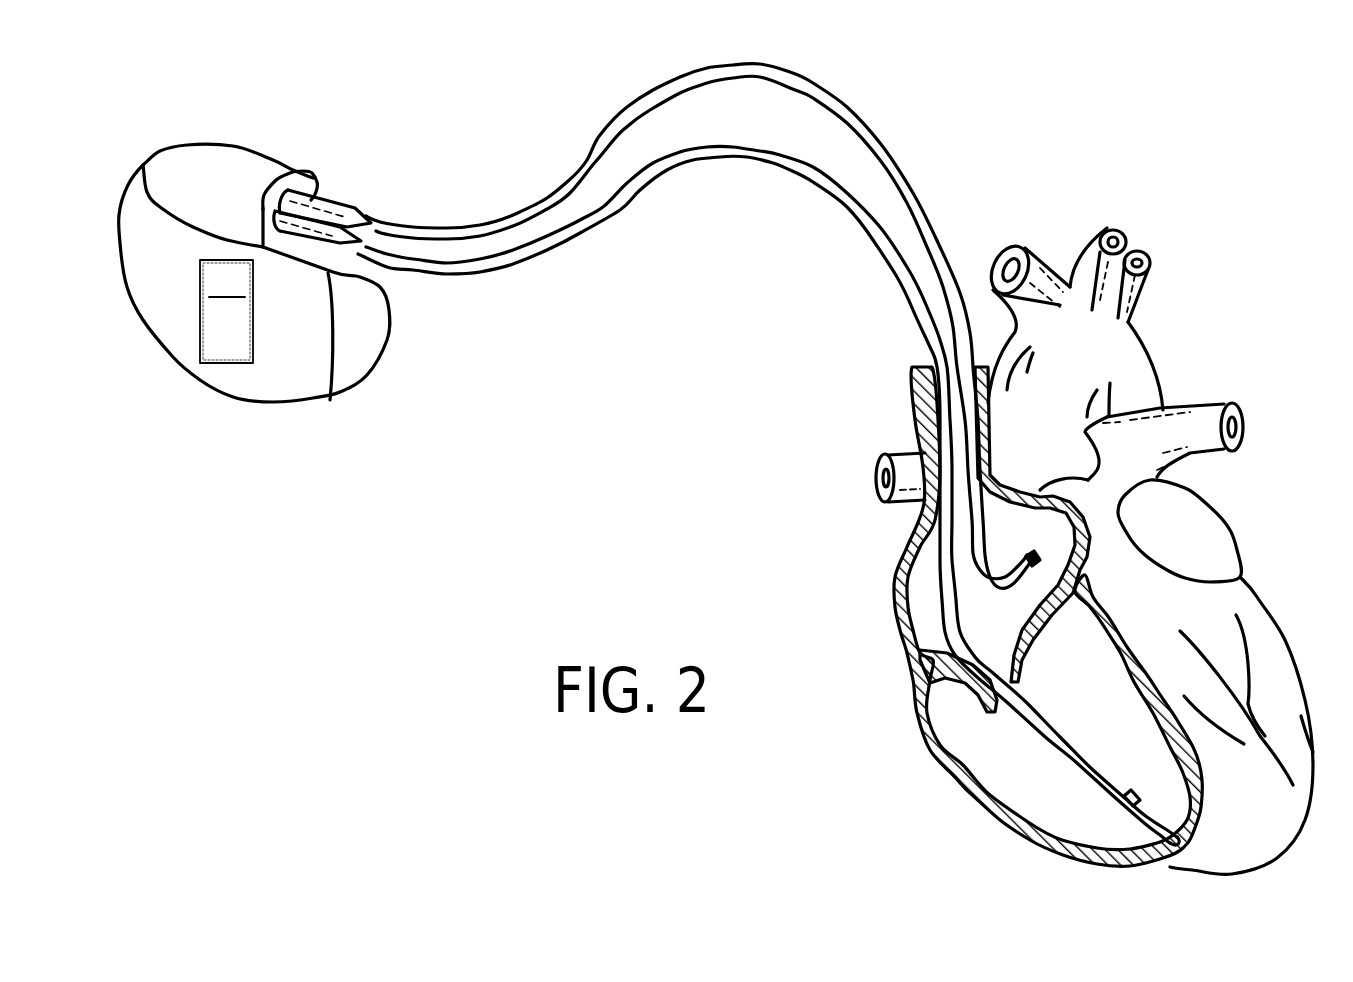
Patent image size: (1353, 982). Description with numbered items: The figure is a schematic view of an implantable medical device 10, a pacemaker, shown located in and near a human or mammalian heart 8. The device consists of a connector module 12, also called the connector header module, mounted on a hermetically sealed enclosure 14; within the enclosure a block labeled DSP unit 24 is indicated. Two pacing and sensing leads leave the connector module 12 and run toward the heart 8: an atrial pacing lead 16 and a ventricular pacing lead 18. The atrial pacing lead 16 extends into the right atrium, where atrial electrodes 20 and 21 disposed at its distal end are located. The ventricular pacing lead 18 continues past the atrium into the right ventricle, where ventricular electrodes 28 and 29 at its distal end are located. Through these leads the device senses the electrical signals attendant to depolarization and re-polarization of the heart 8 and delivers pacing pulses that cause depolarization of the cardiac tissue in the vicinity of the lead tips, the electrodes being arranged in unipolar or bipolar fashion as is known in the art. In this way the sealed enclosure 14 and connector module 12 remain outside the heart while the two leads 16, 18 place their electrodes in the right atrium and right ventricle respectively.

The heart 8 is at (1102, 551).
The implantable medical device 10 is at (281, 299).
The connector module 12 is at (250, 148).
The hermetically sealed enclosure 14 is at (282, 383).
The atrial pacing lead 16 is at (703, 313).
The ventricular pacing lead 18 is at (797, 496).
The atrial electrode 20 is at (1025, 562).
The atrial electrode 21 is at (1044, 492).
The DSP unit 24 is at (226, 311).
The ventricular electrode 28 is at (1128, 803).
The ventricular electrode 29 is at (1180, 845).